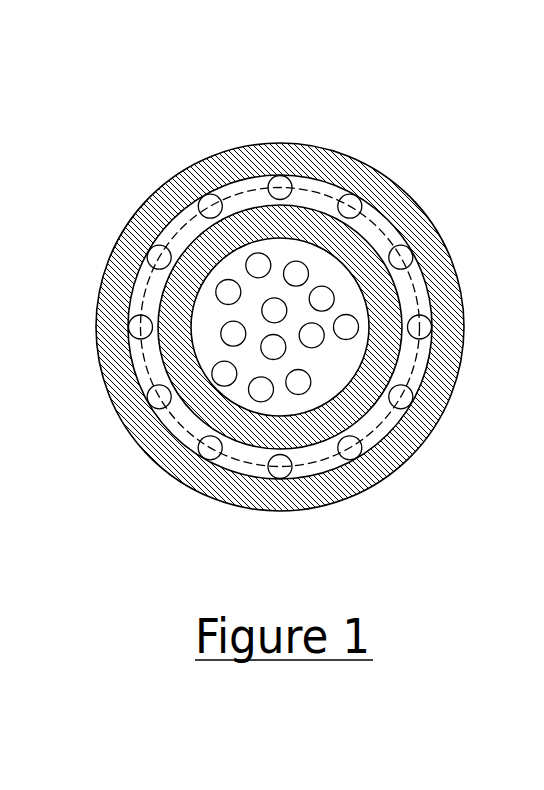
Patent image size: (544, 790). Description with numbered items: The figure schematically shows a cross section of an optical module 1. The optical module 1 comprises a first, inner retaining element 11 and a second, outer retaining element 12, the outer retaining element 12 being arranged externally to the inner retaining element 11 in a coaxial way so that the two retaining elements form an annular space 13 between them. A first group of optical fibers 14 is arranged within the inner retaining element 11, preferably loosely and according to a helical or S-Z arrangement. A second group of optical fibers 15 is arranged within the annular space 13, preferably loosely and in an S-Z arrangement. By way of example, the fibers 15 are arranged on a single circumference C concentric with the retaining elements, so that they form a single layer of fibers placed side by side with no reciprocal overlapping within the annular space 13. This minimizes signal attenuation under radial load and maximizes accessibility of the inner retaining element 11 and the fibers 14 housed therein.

The optical module 1 is at (132, 83).
The first (inner) retaining element 11 is at (322, 212).
The second (outer) retaining element 12 is at (390, 178).
The annular space 13 is at (425, 292).
The first group of optical fibers 14 is at (302, 394).
The second group of optical fibers 15 is at (372, 456).
The circumference C is at (157, 208).